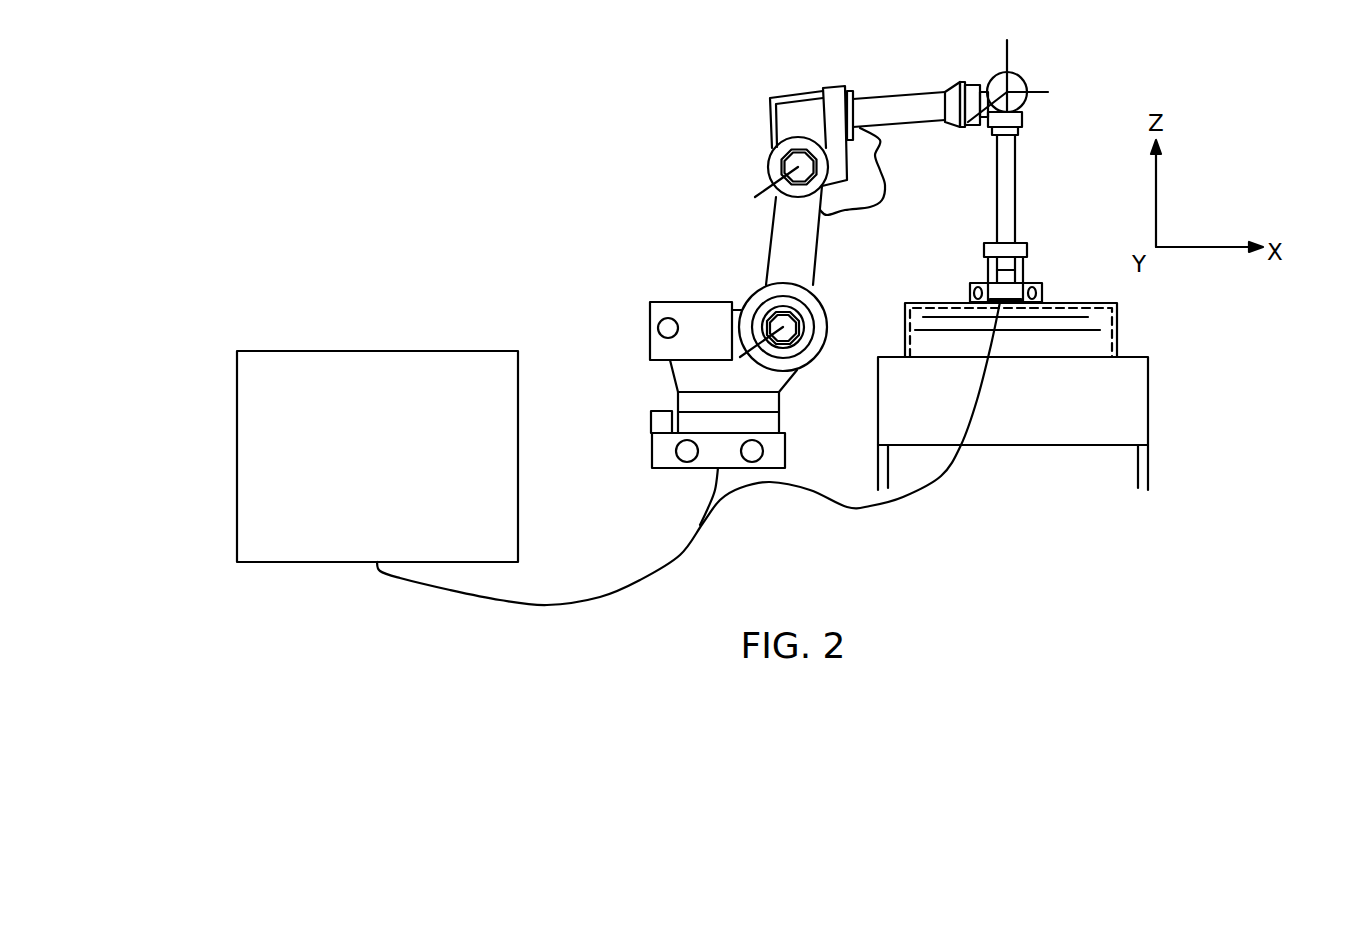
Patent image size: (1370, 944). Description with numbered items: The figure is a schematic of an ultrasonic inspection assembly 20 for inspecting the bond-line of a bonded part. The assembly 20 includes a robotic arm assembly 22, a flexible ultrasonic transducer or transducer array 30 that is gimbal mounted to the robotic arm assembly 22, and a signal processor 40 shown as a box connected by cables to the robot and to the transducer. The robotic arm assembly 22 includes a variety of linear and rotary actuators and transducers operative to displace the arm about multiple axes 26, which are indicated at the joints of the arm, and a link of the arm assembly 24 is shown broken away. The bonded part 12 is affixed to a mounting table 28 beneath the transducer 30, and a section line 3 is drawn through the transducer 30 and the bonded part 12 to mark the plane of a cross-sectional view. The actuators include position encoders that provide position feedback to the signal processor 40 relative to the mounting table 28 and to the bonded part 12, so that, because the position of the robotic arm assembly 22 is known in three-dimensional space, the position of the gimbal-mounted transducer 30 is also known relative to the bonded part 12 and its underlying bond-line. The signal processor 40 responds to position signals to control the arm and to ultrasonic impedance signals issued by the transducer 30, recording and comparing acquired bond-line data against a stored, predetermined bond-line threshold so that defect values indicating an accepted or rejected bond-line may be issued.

The section line 3- 3 is at (1032, 345).
The bonded part 12 is at (1100, 333).
The ultrasonic inspection assembly 20 is at (254, 156).
The robotic arm assembly 22 is at (716, 92).
The robotic arm assembly 24 is at (867, 178).
The axes 26 is at (780, 178).
The mounting table 28 is at (1138, 402).
The ultrasonic transducer 30 is at (1042, 292).
The signal processor 40 is at (378, 351).